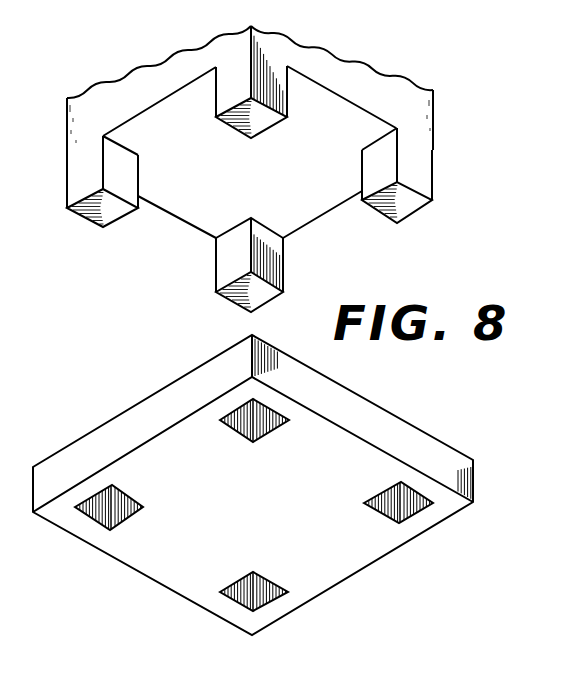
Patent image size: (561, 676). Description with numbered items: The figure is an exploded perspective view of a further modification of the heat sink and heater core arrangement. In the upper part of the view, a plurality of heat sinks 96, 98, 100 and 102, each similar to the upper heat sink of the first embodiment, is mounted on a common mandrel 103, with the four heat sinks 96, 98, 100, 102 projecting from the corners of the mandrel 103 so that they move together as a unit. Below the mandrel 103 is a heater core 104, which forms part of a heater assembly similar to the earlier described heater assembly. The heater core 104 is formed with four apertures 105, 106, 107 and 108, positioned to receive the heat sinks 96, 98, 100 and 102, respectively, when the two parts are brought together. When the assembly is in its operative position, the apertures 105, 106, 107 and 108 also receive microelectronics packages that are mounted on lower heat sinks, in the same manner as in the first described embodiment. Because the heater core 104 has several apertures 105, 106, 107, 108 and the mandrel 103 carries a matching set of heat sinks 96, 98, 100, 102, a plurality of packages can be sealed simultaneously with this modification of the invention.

The heat sink 96 is at (287, 93).
The heat sink 98 is at (430, 183).
The heat sink 100 is at (285, 262).
The heat sink 102 is at (113, 222).
The common mandrel 103 is at (145, 70).
The heater core 104 is at (425, 437).
The aperture 105 is at (275, 425).
The aperture 106 is at (392, 518).
The aperture 107 is at (270, 585).
The aperture 108 is at (130, 503).